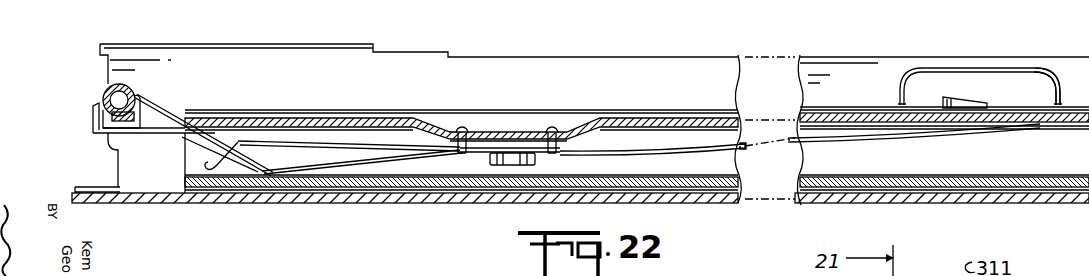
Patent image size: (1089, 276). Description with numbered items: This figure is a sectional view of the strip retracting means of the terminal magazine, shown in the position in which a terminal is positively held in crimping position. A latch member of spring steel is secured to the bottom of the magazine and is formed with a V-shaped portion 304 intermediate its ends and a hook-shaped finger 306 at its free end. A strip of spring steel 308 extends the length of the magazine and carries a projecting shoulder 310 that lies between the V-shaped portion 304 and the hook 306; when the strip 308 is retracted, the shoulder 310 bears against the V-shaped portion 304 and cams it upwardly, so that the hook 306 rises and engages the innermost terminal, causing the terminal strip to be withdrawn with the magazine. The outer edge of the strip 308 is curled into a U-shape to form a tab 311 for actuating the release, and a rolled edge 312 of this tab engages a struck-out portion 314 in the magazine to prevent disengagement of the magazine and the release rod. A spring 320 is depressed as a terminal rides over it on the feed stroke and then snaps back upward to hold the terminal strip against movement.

The spring 320 is at (150, 98).
The hook-shaped finger 306 is at (93, 130).
The shoulder 310 is at (205, 166).
The V-shaped portion 304 is at (300, 162).
The strip of spring steel 308 is at (700, 155).
The rolled edge 312 is at (903, 104).
The struck-out portion 314 is at (953, 103).
The tab 311 is at (1037, 68).